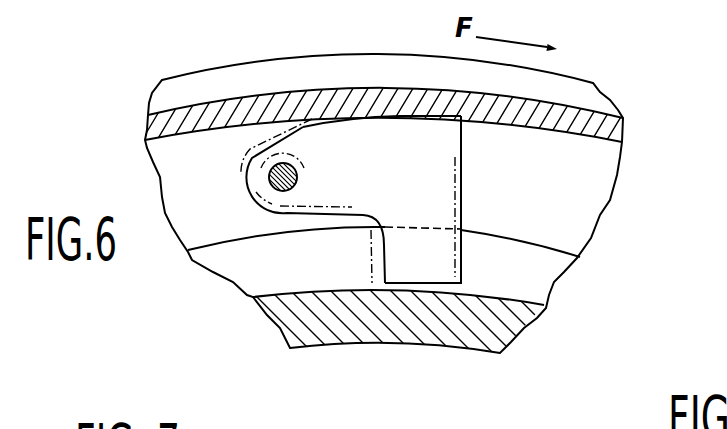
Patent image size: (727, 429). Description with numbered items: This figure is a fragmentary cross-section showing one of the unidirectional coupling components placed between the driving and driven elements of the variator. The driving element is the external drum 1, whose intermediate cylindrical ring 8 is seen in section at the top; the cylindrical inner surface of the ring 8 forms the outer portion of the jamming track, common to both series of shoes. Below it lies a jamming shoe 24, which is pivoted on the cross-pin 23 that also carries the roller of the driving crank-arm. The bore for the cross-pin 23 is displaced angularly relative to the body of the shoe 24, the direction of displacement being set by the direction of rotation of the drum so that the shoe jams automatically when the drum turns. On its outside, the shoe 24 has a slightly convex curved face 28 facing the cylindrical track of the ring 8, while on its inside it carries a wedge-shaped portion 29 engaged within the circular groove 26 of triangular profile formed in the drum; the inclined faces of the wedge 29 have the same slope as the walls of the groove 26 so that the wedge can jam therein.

The external drum 1 is at (125, 89).
The intermediate cylindrical ring 8 is at (210, 106).
The cross-pin 23 is at (270, 186).
The jamming shoe 24 is at (437, 149).
The circular groove 26 is at (534, 271).
The convex curved face 28 is at (298, 117).
The wedge-shaped portion 29 is at (433, 258).